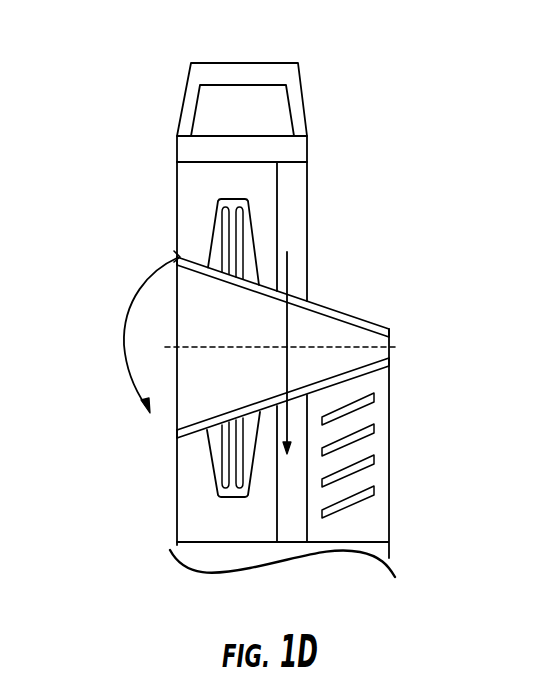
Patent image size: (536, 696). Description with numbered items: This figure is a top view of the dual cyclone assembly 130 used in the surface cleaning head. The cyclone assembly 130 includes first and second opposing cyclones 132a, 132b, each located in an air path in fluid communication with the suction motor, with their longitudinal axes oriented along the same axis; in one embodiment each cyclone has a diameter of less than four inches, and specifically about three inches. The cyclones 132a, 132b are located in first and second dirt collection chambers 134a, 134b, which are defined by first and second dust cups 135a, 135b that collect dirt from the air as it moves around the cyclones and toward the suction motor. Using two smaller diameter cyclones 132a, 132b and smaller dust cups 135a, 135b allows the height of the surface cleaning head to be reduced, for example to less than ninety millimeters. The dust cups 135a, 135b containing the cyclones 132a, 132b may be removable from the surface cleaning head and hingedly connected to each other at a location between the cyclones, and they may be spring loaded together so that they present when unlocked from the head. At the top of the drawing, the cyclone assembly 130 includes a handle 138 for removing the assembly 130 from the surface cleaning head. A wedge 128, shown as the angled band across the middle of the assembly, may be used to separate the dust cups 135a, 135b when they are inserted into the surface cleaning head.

The cyclone assembly 130 is at (108, 111).
The handle 138 is at (193, 68).
The second dirt collection chamber 134b is at (195, 190).
The second dust cup 135b is at (177, 220).
The second cyclone 132b is at (198, 243).
The wedge 128 is at (323, 311).
The first dirt collection chamber 134a is at (203, 462).
The first cyclone 132a is at (212, 476).
The first dust cup 135a is at (195, 508).